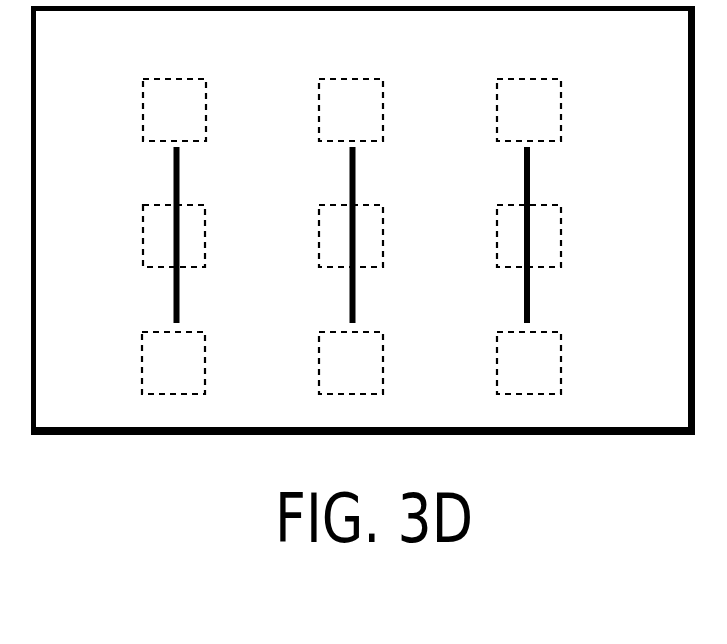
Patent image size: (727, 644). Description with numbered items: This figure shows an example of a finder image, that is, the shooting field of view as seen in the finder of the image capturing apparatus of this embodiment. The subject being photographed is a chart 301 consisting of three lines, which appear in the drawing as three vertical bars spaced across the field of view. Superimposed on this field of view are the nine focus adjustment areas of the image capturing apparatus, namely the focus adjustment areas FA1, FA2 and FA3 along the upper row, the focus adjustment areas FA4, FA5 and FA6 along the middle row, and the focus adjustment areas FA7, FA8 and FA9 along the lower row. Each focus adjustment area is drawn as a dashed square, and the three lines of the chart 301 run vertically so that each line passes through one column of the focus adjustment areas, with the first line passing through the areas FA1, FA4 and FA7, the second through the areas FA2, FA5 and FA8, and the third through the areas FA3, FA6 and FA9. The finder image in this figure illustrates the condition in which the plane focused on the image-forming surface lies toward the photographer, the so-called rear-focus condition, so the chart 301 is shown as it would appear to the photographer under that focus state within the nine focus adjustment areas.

The chart 301 is at (173, 169).
The focus adjustment area FA1 is at (194, 79).
The focus adjustment area FA2 is at (371, 79).
The focus adjustment area FA3 is at (548, 79).
The focus adjustment area FA4 is at (194, 205).
The focus adjustment area FA5 is at (371, 205).
The focus adjustment area FA6 is at (548, 205).
The focus adjustment area FA7 is at (194, 332).
The focus adjustment area FA8 is at (371, 332).
The focus adjustment area FA9 is at (548, 332).